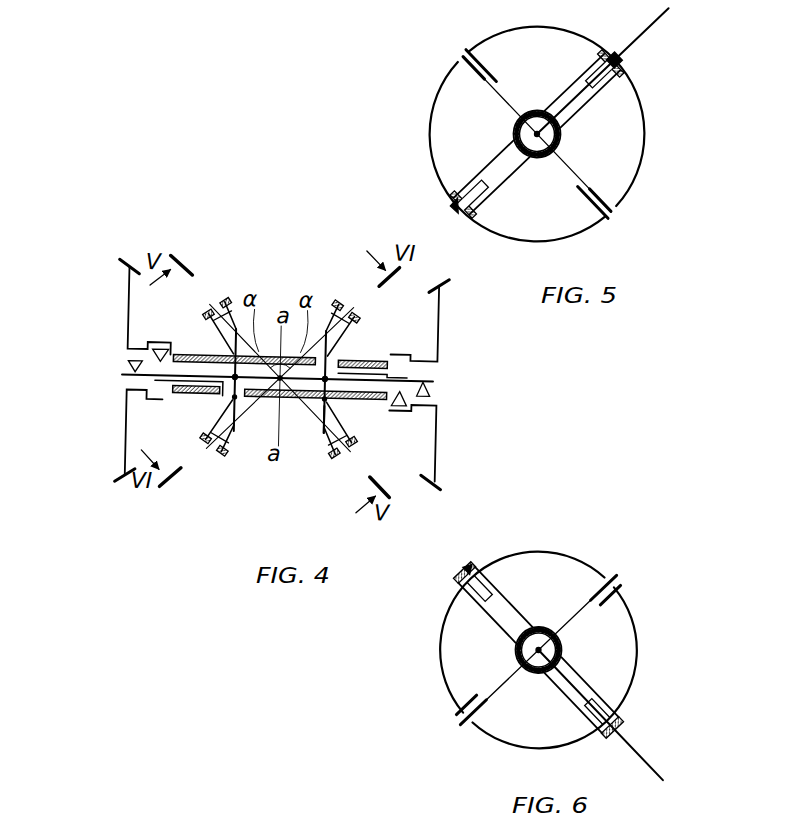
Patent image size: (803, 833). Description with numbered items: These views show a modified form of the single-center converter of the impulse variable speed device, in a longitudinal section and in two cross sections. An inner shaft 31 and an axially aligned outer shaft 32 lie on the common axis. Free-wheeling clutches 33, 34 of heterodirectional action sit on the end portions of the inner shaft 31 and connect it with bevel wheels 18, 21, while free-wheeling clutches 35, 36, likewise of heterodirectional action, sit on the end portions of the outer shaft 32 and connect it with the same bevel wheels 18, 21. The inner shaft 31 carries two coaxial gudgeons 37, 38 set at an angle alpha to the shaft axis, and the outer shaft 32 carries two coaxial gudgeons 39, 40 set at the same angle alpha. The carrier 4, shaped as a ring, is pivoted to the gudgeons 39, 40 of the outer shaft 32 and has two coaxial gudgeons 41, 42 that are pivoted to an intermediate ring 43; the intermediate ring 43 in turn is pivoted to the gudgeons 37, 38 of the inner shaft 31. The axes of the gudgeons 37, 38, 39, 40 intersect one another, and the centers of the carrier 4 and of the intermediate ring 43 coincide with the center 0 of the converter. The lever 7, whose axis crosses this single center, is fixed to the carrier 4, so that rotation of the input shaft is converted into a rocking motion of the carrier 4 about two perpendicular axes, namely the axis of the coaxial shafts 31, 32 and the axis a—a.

In FIG. 4, the center 0 is at (277, 383).
In FIG. 5, the center 0 is at (537, 138).
In FIG. 6, the center 0 is at (538, 654).
In FIG. 4, the carrier 4 is at (308, 437).
In FIG. 5, the carrier 4 is at (636, 166).
In FIG. 6, the carrier 4 is at (606, 737).
In FIG. 5, the lever 7 is at (652, 27).
In FIG. 6, the lever 7 is at (638, 750).
In FIG. 4, the bevel wheel 18 is at (126, 316).
In FIG. 4, the bevel wheel 21 is at (437, 436).
In FIG. 4, the inner shaft 31 is at (434, 380).
In FIG. 4, the outer shaft 32 is at (337, 401).
In FIG. 5, the outer shaft 32 is at (562, 144).
In FIG. 6, the outer shaft 32 is at (547, 627).
In FIG. 4, the free-wheeling clutch 33 is at (130, 373).
In FIG. 4, the free-wheeling clutch 34 is at (417, 359).
In FIG. 4, the free-wheeling clutch 35 is at (160, 352).
In FIG. 4, the free-wheeling clutch 36 is at (400, 404).
In FIG. 4, the gudgeon 37 is at (348, 303).
In FIG. 6, the gudgeon 37 is at (606, 579).
In FIG. 4, the gudgeon 38 is at (207, 448).
In FIG. 6, the gudgeon 38 is at (466, 727).
In FIG. 4, the gudgeon 39 is at (215, 299).
In FIG. 5, the gudgeon 39 is at (462, 72).
In FIG. 4, the gudgeon 40 is at (349, 452).
In FIG. 5, the gudgeon 40 is at (602, 213).
In FIG. 5, the gudgeon 41 is at (594, 87).
In FIG. 6, the gudgeon 41 is at (587, 704).
In FIG. 5, the gudgeon 42 is at (471, 184).
In FIG. 6, the gudgeon 42 is at (489, 599).
In FIG. 4, the intermediate ring 43 is at (236, 434).
In FIG. 5, the intermediate ring 43 is at (561, 90).
In FIG. 6, the intermediate ring 43 is at (441, 677).